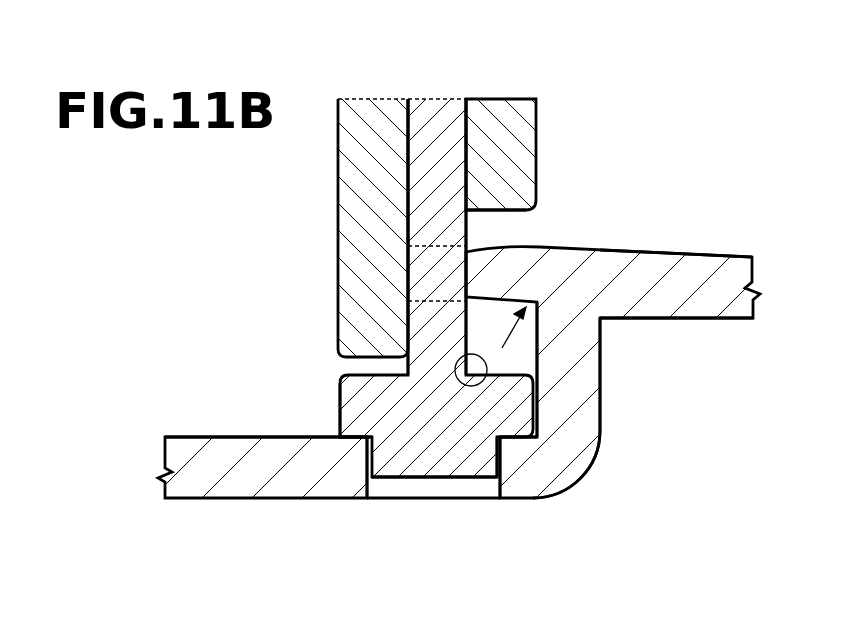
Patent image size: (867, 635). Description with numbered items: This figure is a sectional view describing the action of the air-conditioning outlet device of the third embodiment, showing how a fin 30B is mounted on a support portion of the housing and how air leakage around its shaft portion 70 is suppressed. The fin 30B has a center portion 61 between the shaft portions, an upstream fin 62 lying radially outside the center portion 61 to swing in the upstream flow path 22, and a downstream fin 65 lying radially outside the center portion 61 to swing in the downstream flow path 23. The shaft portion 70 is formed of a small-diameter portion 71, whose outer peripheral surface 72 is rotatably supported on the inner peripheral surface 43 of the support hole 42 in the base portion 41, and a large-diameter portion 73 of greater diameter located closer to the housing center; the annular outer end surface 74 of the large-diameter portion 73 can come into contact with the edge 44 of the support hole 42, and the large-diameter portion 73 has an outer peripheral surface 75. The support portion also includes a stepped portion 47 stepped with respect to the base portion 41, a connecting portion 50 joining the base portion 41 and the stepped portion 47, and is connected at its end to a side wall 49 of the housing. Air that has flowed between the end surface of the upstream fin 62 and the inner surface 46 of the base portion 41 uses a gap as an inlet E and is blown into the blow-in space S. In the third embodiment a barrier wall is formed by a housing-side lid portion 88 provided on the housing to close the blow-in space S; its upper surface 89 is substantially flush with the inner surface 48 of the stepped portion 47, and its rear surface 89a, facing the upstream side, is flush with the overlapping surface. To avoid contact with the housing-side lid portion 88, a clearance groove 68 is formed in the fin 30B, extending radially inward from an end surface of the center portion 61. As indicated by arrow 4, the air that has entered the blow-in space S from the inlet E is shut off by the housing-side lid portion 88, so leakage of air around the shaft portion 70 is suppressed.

The upstream fin 62 is at (372, 122).
The center portion 61 is at (430, 115).
The fin 30B is at (399, 303).
The downstream fin 65 is at (501, 117).
The upper surface 89 is at (490, 247).
The rear surface 89a is at (460, 268).
The clearance groove 68 is at (437, 302).
The housing-side lid portion 88 is at (508, 270).
The inner surface 48 is at (716, 255).
The stepped portion 47 is at (725, 312).
The connecting portion 50 is at (585, 358).
The side wall 49 is at (597, 476).
The outer peripheral surface 75 is at (538, 408).
The annular outer end surface 74 is at (508, 440).
The outer peripheral surface 72 is at (506, 456).
The small-diameter portion 71 is at (448, 453).
The large-diameter portion 73 is at (463, 420).
The shaft portion 70 is at (425, 542).
The inner surface 46 is at (256, 436).
The edge 44 is at (345, 438).
The base portion 41 is at (257, 478).
The support hole 42 is at (377, 503).
The inner peripheral surface 43 is at (400, 492).
The arrow 4 is at (501, 336).
The blow-in space S is at (475, 345).
The inlet E is at (462, 360).
The upstream flow path 22 is at (224, 241).
The downstream flow path 23 is at (624, 154).